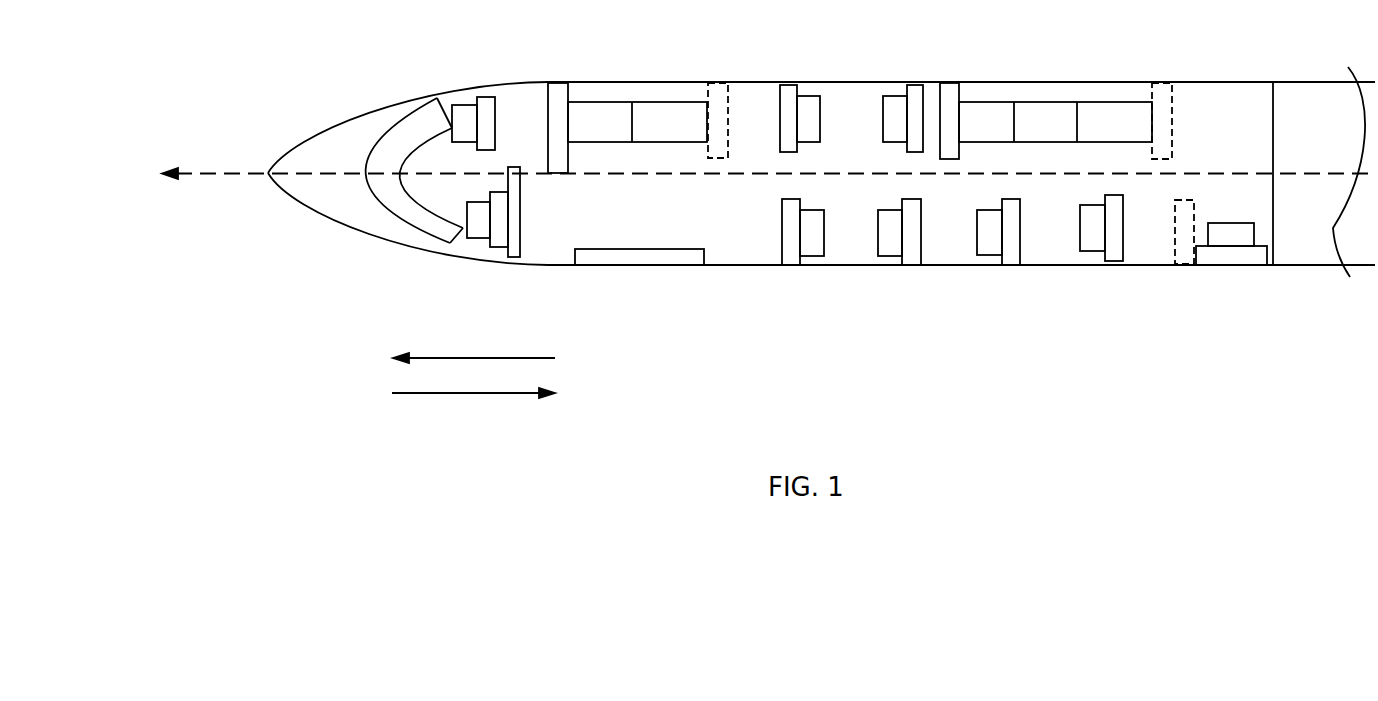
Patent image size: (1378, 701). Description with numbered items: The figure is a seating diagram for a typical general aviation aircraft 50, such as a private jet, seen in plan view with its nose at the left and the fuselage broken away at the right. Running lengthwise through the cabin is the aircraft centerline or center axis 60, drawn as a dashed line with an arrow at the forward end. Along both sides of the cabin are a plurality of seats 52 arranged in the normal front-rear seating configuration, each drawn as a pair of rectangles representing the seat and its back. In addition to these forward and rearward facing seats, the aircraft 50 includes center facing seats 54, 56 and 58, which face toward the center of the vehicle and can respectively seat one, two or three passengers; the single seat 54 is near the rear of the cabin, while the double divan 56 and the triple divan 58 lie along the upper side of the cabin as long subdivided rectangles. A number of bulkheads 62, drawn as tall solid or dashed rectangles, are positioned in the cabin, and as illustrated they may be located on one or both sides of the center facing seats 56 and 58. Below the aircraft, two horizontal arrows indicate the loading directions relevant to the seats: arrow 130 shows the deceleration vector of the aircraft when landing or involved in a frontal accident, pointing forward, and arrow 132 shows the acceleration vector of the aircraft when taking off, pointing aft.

The aircraft 50 is at (841, 73).
The seats 52 is at (805, 108).
The center facing seat 54 is at (1233, 235).
The center facing seat 56 is at (682, 112).
The center facing seat 58 is at (1107, 113).
The aircraft centerline 60 is at (242, 173).
The bulkheads 62 is at (547, 92).
The deceleration vector arrow 130 is at (473, 357).
The acceleration vector arrow 132 is at (480, 393).